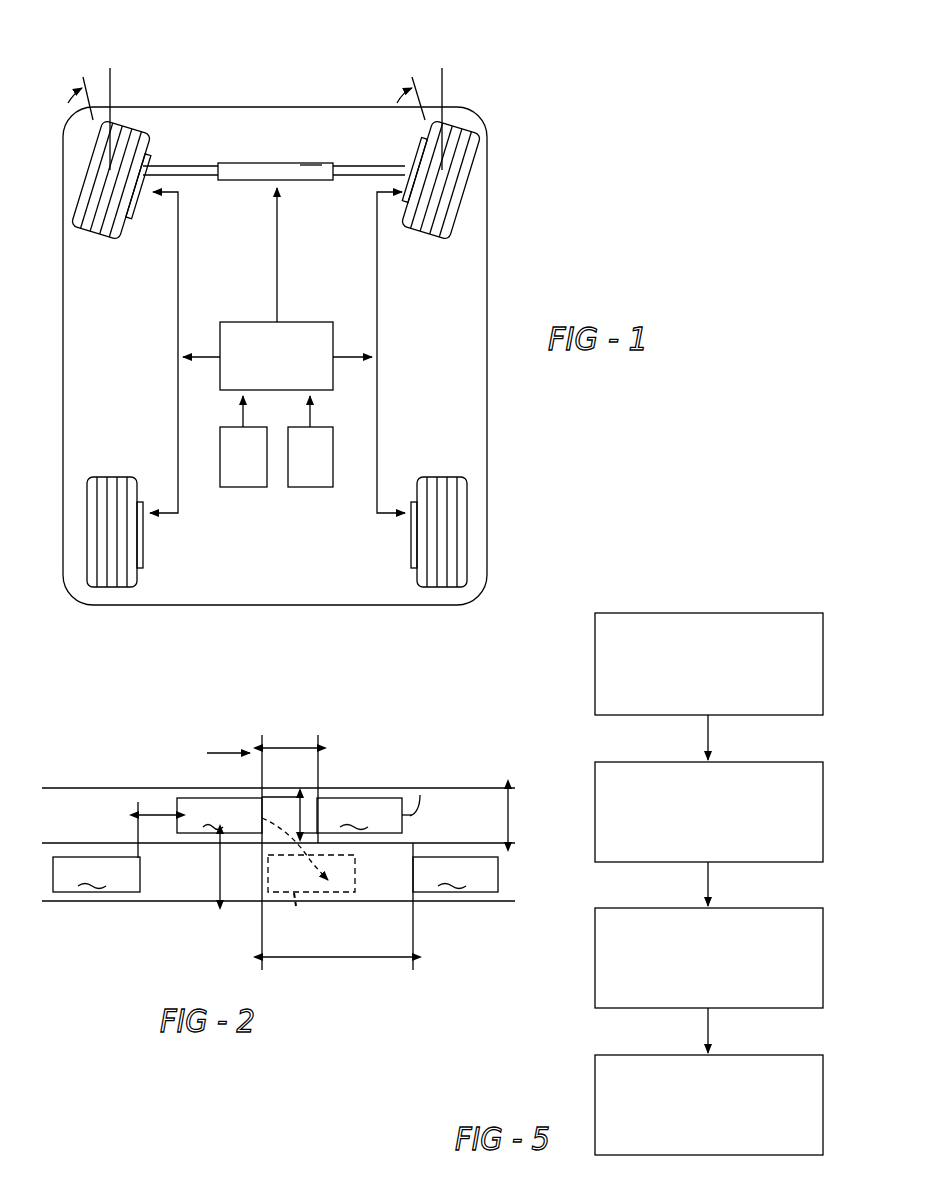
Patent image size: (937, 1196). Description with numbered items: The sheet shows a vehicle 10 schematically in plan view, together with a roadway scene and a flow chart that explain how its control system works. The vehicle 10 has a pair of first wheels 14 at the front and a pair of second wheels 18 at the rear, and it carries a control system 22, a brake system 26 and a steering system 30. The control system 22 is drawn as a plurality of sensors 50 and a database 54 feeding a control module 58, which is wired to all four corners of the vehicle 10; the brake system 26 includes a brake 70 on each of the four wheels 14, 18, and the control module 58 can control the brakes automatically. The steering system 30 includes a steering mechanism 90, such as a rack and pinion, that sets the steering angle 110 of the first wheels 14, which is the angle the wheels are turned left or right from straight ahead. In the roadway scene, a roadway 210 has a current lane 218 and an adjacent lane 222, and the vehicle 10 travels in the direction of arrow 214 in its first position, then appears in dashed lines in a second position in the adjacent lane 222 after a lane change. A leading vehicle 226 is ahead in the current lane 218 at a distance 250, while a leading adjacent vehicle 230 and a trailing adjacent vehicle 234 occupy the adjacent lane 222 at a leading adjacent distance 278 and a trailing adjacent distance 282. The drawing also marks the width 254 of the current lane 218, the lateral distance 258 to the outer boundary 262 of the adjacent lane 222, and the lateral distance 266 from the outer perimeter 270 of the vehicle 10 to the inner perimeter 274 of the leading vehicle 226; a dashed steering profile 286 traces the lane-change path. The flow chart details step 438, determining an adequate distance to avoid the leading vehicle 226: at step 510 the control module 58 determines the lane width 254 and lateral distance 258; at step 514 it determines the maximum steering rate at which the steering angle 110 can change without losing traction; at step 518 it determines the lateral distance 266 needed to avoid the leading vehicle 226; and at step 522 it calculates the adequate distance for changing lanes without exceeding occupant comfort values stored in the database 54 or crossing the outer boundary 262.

In FIG. 1, the vehicle 10 is at (538, 188).
In FIG. 2, the vehicle 10 is at (190, 797).
In FIG. 1, the first wheels 14 is at (80, 177).
In FIG. 1, the second wheels 18 is at (87, 505).
In FIG. 1, the control system 22 is at (273, 504).
In FIG. 1, the brake system 26 is at (158, 565).
In FIG. 1, the steering system 30 is at (249, 162).
In FIG. 1, the sensors 50 is at (252, 468).
In FIG. 1, the database 54 is at (319, 468).
In FIG. 1, the control module 58 is at (286, 366).
In FIG. 1, the brake 70 is at (135, 148).
In FIG. 1, the steering mechanism 90 is at (306, 165).
In FIG. 1, the steering angle 110 is at (117, 76).
In FIG. 2, the roadway 210 is at (65, 785).
In FIG. 2, the arrow 214 is at (228, 752).
In FIG. 2, the current lane 218 is at (88, 808).
In FIG. 2, the adjacent lane 222 is at (178, 900).
In FIG. 2, the leading vehicle 226 is at (368, 814).
In FIG. 2, the leading adjacent vehicle 230 is at (455, 874).
In FIG. 2, the trailing adjacent vehicle 234 is at (96, 874).
In FIG. 2, the distance 250 is at (290, 748).
In FIG. 2, the width 254 is at (500, 815).
In FIG. 2, the lateral distance 258 is at (225, 872).
In FIG. 2, the outer boundary 262 is at (100, 900).
In FIG. 2, the lateral distance 266 is at (305, 800).
In FIG. 2, the outer perimeter 270 is at (208, 797).
In FIG. 2, the inner perimeter 274 is at (362, 835).
In FIG. 2, the leading adjacent distance 278 is at (340, 960).
In FIG. 2, the trailing adjacent distance 282 is at (150, 820).
In FIG. 2, the steering profile 286 is at (326, 866).
In FIG. 5, the step 438 is at (707, 588).
In FIG. 5, the step 510 is at (595, 668).
In FIG. 5, the step 514 is at (595, 774).
In FIG. 5, the step 518 is at (595, 978).
In FIG. 5, the step 522 is at (595, 1092).